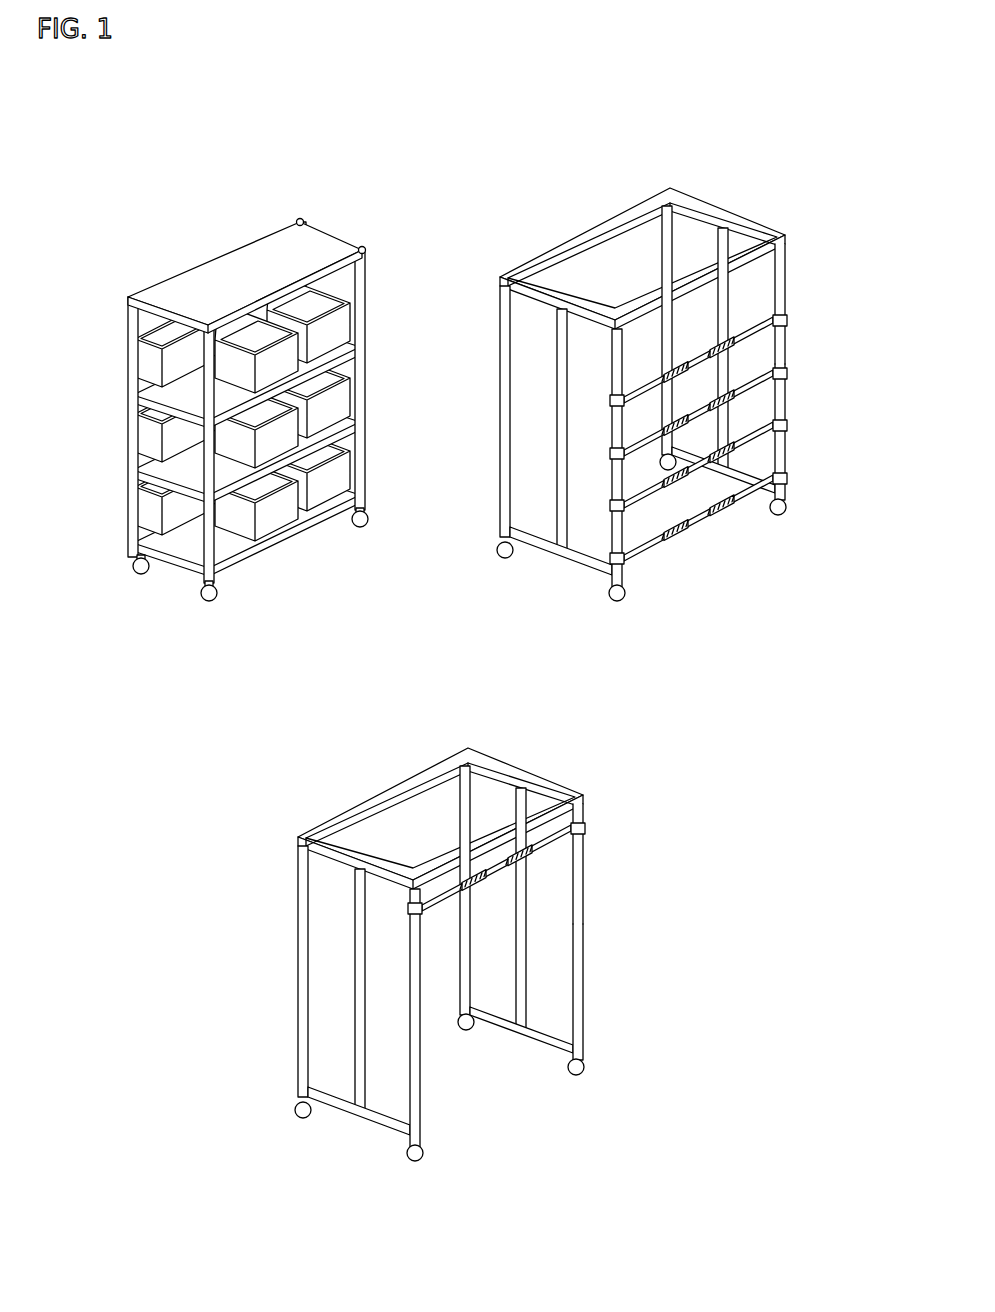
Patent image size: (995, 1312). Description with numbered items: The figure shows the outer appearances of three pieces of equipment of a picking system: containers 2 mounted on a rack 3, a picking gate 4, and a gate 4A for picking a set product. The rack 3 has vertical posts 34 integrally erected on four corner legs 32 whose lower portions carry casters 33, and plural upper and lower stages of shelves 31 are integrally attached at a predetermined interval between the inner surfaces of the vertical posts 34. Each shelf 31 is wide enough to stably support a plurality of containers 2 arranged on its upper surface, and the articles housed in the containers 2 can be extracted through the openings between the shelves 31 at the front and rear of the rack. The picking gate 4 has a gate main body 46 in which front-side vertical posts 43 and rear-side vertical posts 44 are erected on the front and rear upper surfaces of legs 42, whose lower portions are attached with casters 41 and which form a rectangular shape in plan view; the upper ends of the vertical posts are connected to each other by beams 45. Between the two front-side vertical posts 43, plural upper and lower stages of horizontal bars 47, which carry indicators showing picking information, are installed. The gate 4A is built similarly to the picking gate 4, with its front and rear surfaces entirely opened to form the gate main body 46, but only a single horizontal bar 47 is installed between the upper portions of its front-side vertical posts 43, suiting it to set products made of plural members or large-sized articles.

The container 2 is at (340, 318).
The rack 3 is at (244, 407).
The picking gate 4 is at (536, 651).
The gate for picking a set product 4A is at (546, 778).
The shelf 31 is at (239, 450).
The leg 32 is at (178, 557).
The caster 33 is at (135, 571).
The vertical post 34 is at (302, 220).
The caster 41 is at (505, 558).
The leg 42 is at (575, 557).
The front-side vertical post 43 is at (611, 472).
The rear-side vertical post 44 is at (657, 220).
The beam 45 is at (546, 257).
The gate main body 46 is at (786, 288).
The horizontal bar 47 is at (775, 316).